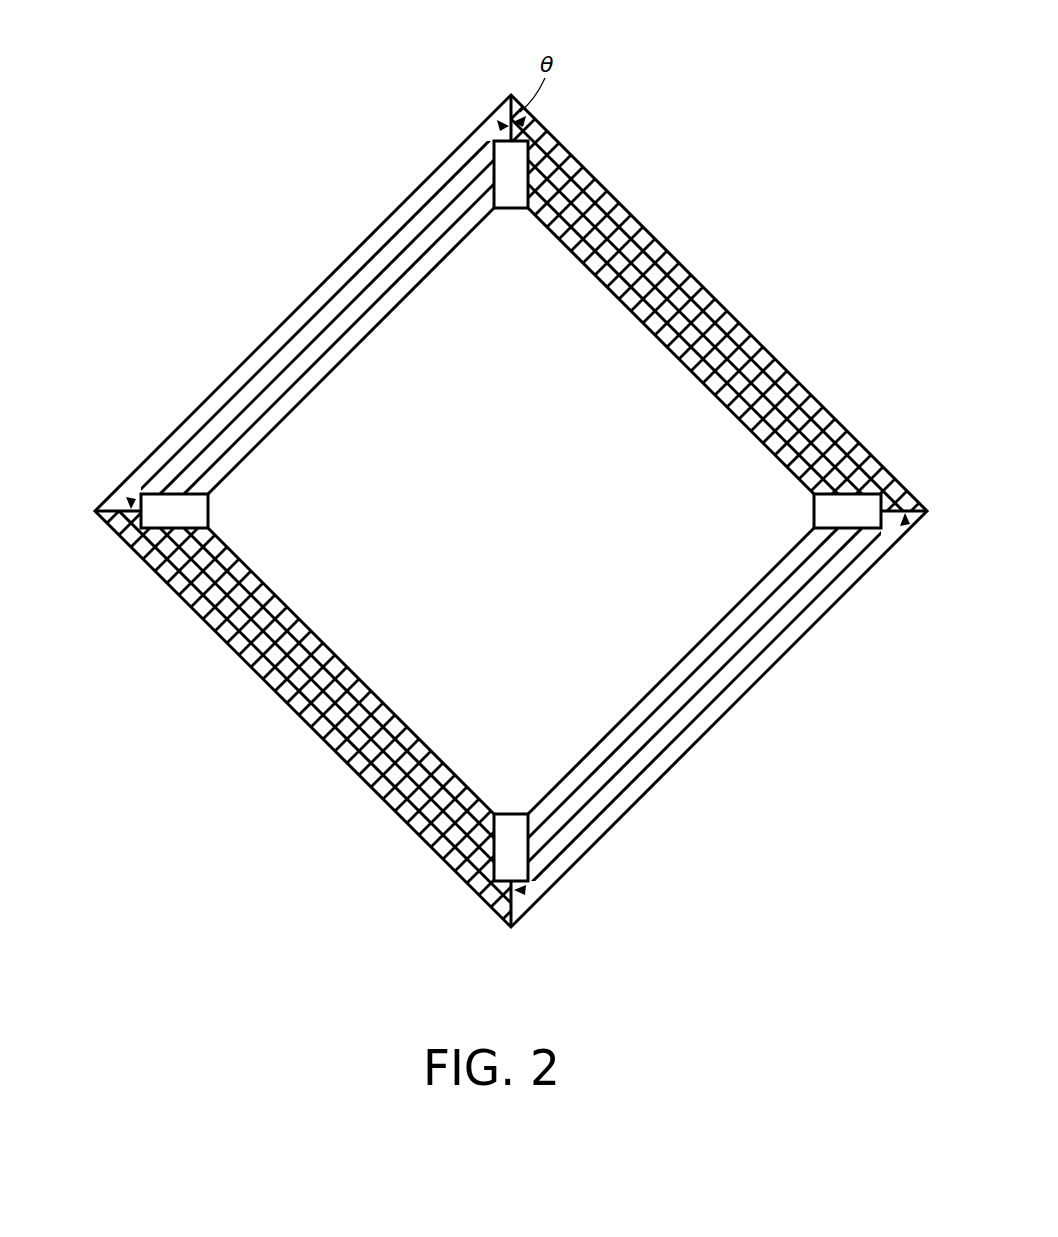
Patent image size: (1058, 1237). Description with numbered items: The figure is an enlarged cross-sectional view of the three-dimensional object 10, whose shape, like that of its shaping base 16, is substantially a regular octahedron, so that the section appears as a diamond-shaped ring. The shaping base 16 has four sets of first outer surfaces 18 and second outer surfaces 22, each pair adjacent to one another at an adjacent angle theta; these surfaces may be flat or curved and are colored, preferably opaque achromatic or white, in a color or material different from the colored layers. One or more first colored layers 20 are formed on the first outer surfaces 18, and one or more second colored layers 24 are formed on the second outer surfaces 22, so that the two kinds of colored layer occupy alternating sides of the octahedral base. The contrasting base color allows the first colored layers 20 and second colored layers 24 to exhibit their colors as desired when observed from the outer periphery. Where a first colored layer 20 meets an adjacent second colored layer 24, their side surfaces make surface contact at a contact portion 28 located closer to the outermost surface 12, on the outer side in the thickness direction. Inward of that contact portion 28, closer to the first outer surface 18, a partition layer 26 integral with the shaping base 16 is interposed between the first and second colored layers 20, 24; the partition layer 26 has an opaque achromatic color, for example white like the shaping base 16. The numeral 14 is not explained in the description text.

The three-dimensional object 10 is at (283, 103).
The outermost surface 12 is at (367, 237).
The second frame member 14 is at (612, 190).
The shaping base 16 is at (355, 415).
The first outer surface 18 is at (375, 325).
The first colored layer 20 is at (438, 223).
The second outer surface 22 is at (625, 303).
The second colored layer 24 is at (568, 193).
The partition layer 26 is at (512, 177).
The contact portion 28 is at (492, 127).